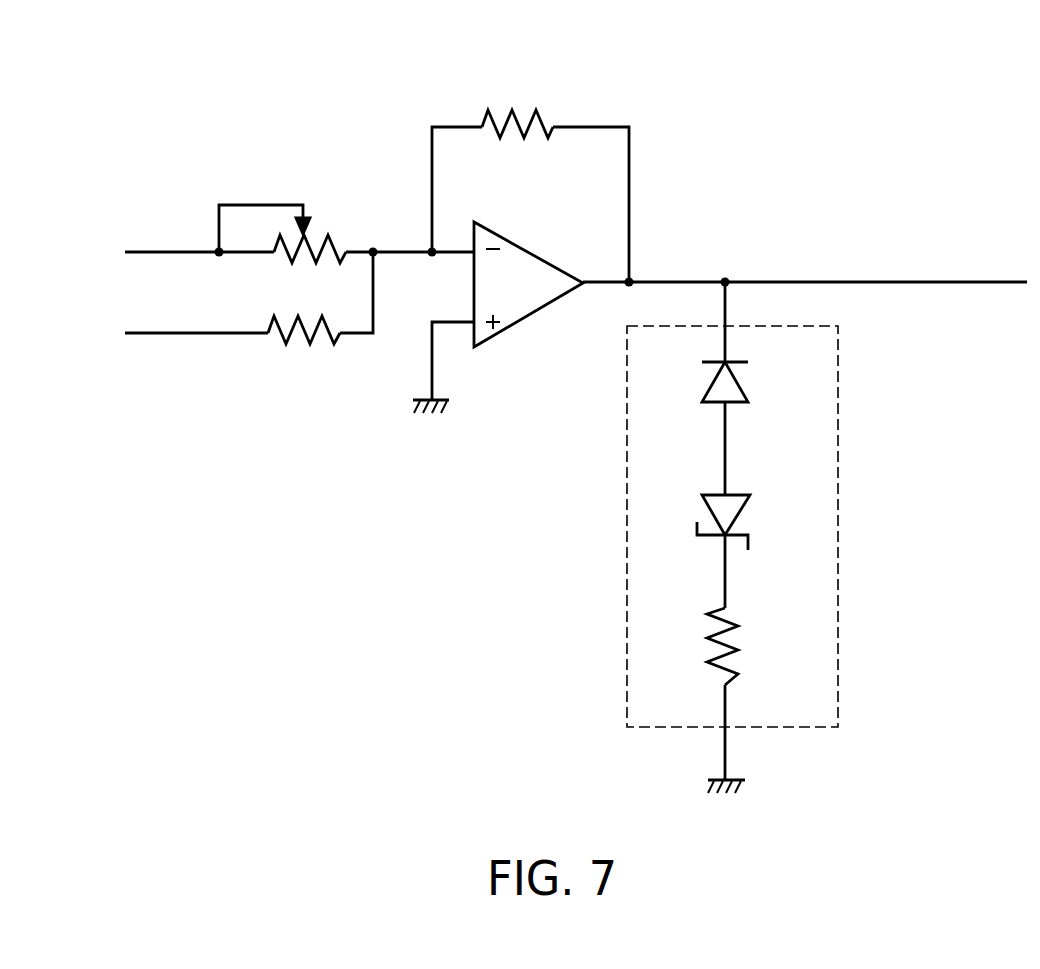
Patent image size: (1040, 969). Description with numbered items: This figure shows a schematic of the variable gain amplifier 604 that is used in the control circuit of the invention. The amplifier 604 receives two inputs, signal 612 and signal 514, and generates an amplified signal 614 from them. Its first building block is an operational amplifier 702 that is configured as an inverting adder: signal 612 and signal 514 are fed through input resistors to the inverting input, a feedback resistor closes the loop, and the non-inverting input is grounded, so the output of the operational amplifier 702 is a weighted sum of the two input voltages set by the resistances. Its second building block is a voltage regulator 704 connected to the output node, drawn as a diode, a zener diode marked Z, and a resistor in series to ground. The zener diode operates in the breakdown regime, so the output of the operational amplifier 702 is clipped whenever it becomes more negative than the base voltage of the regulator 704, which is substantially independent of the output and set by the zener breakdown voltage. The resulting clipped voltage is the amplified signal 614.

The variable gain amplifier 604 is at (341, 567).
The signal 612 is at (177, 251).
The signal 514 is at (201, 335).
The operational amplifier 702 is at (525, 250).
The amplified signal 614 is at (873, 281).
The voltage regulator 704 is at (838, 477).